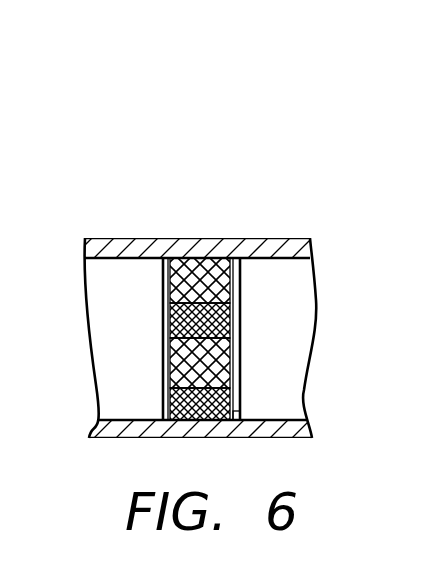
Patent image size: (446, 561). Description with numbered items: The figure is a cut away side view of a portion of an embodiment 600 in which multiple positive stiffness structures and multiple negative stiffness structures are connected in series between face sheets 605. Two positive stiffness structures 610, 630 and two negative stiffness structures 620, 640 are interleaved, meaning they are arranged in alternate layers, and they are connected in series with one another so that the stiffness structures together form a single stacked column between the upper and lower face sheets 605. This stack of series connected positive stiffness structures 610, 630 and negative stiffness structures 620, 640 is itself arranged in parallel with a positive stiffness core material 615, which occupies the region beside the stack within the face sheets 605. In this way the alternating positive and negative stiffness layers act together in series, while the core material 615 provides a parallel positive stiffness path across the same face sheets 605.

The embodiment 600 is at (152, 207).
The face sheets 605 is at (270, 246).
The positive stiffness structure 610 is at (162, 291).
The positive stiffness core material 615 is at (130, 397).
The negative stiffness structure 620 is at (241, 334).
The positive stiffness structure 630 is at (170, 366).
The negative stiffness structure 640 is at (238, 414).